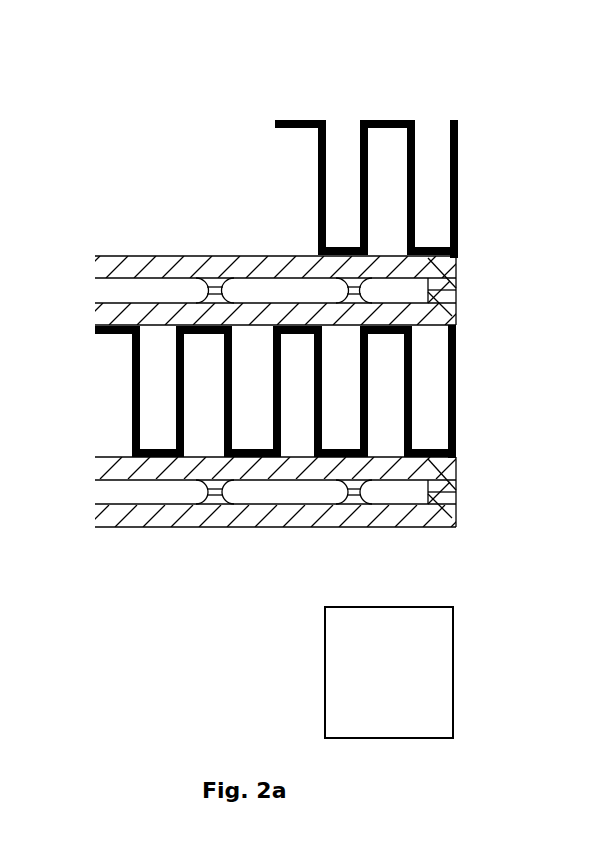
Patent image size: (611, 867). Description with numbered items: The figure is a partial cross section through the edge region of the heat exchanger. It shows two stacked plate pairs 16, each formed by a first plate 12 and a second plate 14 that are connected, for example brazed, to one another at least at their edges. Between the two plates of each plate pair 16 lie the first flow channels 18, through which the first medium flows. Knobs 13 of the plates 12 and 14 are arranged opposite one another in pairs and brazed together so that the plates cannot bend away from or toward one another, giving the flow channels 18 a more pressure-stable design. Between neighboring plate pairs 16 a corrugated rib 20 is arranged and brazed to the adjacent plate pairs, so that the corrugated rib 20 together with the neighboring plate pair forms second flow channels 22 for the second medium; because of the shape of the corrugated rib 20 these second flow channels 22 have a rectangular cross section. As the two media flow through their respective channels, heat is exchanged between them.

The first plate 12 is at (172, 313).
The knobs 13 is at (350, 288).
The second plate 14 is at (210, 266).
The plate pair 16 is at (476, 506).
The first flow channels 18 is at (268, 287).
The corrugated ribs 20 is at (457, 190).
The second flow channels 22 is at (383, 367).